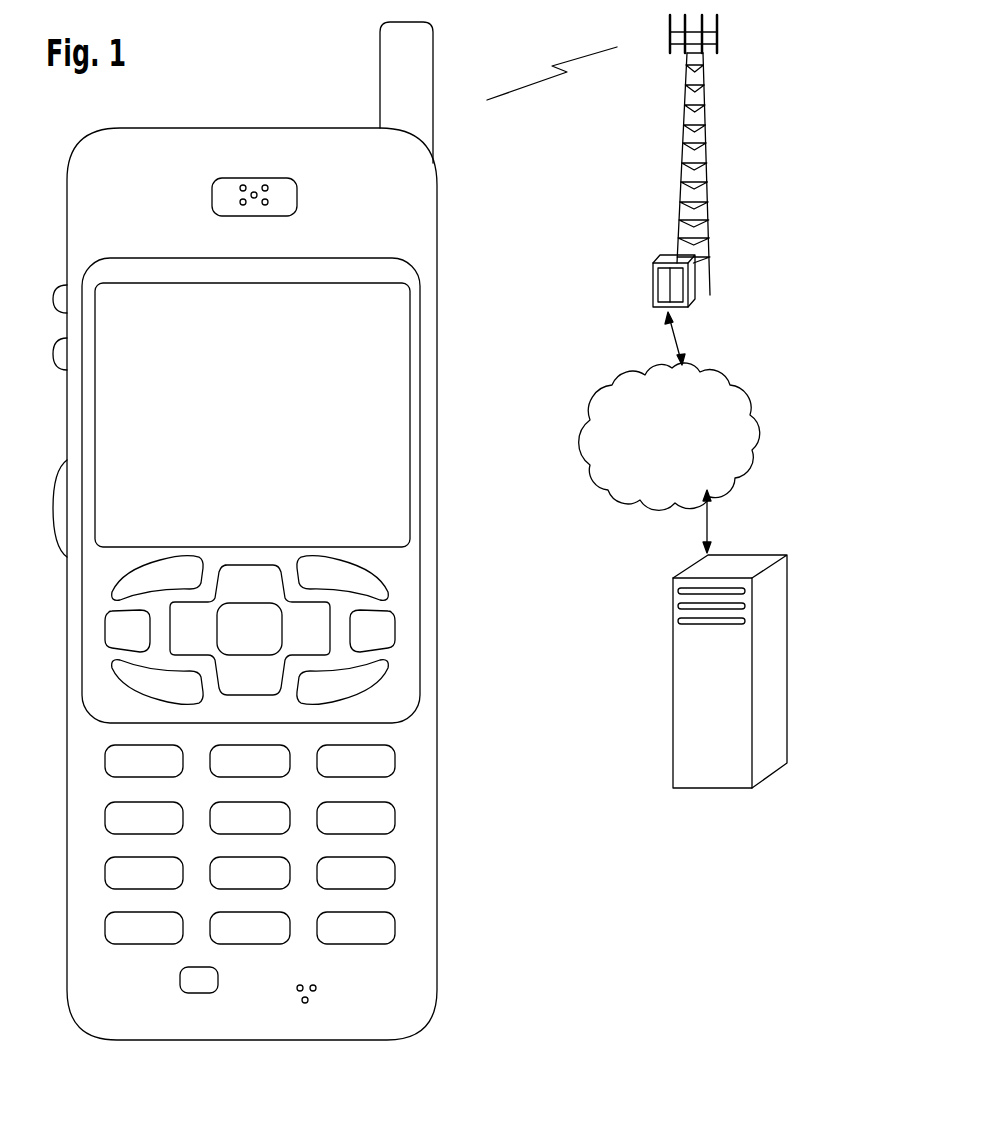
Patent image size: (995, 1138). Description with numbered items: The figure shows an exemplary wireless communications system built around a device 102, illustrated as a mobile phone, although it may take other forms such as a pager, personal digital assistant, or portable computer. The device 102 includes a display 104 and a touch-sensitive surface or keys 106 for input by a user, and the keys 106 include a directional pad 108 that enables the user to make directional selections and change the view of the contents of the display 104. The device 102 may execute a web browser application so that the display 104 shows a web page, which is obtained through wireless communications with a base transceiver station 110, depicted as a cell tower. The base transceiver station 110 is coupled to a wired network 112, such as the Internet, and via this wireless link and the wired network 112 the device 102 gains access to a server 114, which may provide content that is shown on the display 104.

The device 102 is at (112, 1042).
The display 104 is at (420, 293).
The touch-sensitive surface or keys 106 is at (502, 555).
The directional pad 108 is at (442, 555).
The base transceiver station 110 is at (684, 175).
The wired network 112 is at (603, 480).
The server 114 is at (678, 788).